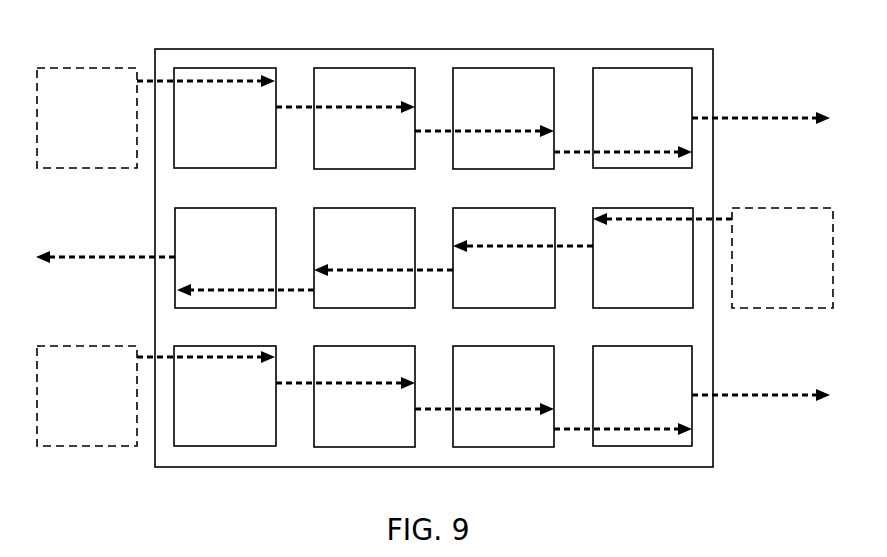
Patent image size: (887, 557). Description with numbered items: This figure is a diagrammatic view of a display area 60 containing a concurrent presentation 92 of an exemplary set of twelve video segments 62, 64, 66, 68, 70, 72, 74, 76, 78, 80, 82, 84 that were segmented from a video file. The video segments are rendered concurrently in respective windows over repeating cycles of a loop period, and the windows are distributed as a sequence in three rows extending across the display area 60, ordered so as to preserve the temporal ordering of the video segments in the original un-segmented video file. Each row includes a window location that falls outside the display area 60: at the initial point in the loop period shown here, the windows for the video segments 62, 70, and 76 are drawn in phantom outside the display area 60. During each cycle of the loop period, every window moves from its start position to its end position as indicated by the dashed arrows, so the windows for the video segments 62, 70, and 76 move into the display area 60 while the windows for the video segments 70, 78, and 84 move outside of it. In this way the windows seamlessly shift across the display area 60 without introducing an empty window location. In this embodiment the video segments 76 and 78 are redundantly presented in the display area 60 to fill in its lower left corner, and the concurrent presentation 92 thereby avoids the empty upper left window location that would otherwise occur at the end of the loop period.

The concurrent presentation 92 is at (104, 28).
The display area 60 is at (713, 68).
The video segment 62 is at (87, 118).
The video segment 64 is at (225, 118).
The video segment 66 is at (364, 118).
The video segment 68 is at (503, 118).
The video segment 70 is at (713, 188).
The video segment 72 is at (643, 258).
The video segment 74 is at (504, 258).
The video segment 76 is at (226, 327).
The video segment 78 is at (225, 327).
The video segment 80 is at (364, 396).
The video segment 82 is at (503, 396).
The video segment 84 is at (642, 396).